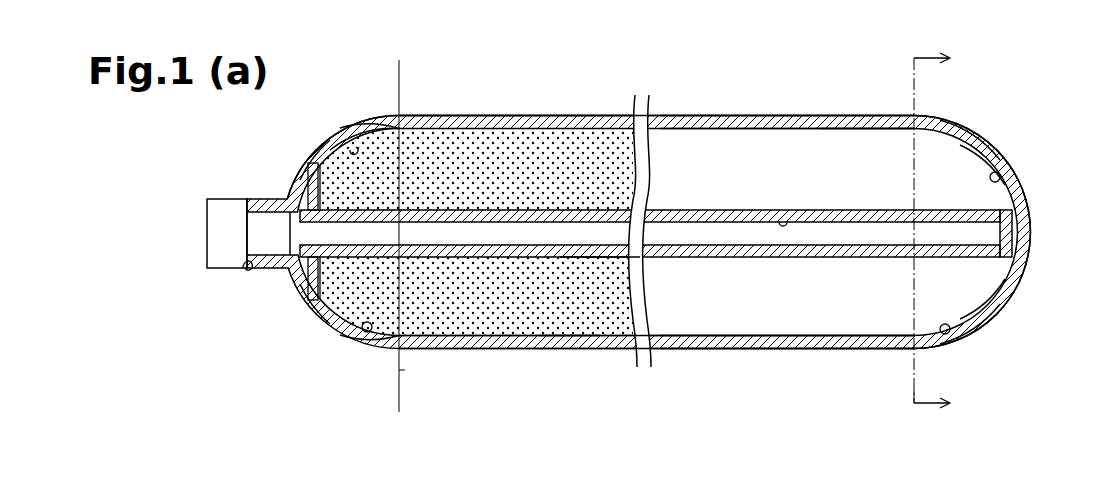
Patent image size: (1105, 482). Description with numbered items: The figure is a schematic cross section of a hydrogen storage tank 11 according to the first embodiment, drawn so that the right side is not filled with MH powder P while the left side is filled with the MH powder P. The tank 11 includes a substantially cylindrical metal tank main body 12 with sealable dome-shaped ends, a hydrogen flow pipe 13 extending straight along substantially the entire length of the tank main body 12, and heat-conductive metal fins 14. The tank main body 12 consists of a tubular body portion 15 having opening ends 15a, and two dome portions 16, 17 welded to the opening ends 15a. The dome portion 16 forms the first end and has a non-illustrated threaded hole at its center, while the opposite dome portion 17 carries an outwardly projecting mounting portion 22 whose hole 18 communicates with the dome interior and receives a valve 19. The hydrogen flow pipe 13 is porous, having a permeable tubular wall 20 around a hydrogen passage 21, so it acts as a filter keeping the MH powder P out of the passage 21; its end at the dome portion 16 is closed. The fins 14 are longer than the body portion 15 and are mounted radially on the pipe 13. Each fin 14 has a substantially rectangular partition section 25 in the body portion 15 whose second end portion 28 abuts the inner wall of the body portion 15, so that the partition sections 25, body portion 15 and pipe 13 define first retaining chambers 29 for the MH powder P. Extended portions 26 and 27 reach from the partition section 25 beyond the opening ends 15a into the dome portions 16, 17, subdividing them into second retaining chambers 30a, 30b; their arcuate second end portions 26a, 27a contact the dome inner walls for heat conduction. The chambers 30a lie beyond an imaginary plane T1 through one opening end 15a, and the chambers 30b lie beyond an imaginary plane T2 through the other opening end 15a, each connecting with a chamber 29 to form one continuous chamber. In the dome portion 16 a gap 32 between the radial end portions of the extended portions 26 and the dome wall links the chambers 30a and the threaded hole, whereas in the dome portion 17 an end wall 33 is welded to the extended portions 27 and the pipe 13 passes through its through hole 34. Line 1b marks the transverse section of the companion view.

The hydrogen storage tank 11 is at (331, 427).
The tank main body 12 is at (735, 354).
The hydrogen flow pipe 13 is at (604, 270).
The fins 14 is at (733, 112).
The body portion 15 is at (522, 118).
The opening ends 15a is at (399, 398).
The dome portion 16 is at (928, 120).
The dome portion 17 is at (384, 150).
The hole 18 is at (247, 268).
The valve 19 is at (220, 199).
The tubular wall 20 is at (853, 205).
The hydrogen passage 21 is at (780, 211).
The mounting portion 22 is at (259, 199).
The partition section 25 is at (693, 138).
The extended portion 26 is at (958, 152).
The arcuate second end portion 26a is at (990, 148).
The extended portion 27 is at (404, 126).
The arcuate second end portion 27a is at (335, 148).
The second end portion 28 is at (883, 121).
The first retaining chambers 29 is at (567, 332).
The second retaining chambers 30a is at (1006, 182).
The second retaining chambers 30b is at (352, 147).
The gap 32 is at (1017, 252).
The end wall 33 is at (312, 185).
The through hole 34 is at (313, 290).
The MH powder P is at (607, 148).
The imaginary plane T1 is at (913, 403).
The imaginary plane T2 is at (401, 372).
The section line 1b- 1b is at (947, 231).